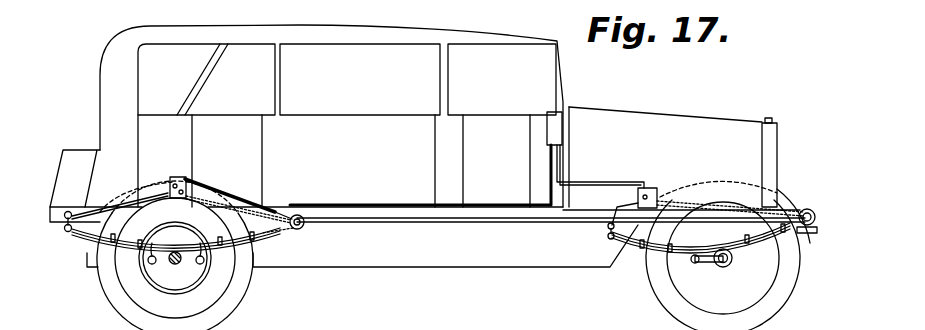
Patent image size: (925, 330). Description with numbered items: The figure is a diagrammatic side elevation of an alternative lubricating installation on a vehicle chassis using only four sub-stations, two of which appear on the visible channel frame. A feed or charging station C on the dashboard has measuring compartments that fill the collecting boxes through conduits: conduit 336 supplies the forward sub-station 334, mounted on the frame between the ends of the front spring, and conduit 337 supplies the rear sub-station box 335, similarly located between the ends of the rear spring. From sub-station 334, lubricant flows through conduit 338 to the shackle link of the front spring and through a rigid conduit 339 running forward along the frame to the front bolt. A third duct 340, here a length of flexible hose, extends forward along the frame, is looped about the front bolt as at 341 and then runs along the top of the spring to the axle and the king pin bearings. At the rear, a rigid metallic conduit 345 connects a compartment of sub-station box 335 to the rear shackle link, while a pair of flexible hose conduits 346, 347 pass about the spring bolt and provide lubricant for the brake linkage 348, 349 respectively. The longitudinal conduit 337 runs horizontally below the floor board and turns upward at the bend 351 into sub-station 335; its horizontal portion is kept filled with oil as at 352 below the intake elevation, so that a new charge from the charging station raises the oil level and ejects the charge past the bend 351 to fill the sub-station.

The feed or charging station C is at (553, 116).
The sub-station 334 is at (660, 195).
The rear sub-station box 335 is at (168, 180).
The conduit 336 is at (603, 180).
The conduit 337 is at (422, 202).
The conduit 338 is at (628, 214).
The rigid conduit 339 is at (662, 214).
The third duct 340 is at (688, 213).
The loop about front bolt 341 is at (815, 217).
The rigid metallic conduit 345 is at (112, 200).
The flexible hose conduit 346 is at (230, 197).
The flexible hose conduit 347 is at (243, 203).
The brake linkage 348 is at (150, 262).
The brake linkage 349 is at (203, 262).
The bend 351 is at (186, 178).
The oil filled horizontal portion 352 is at (363, 202).